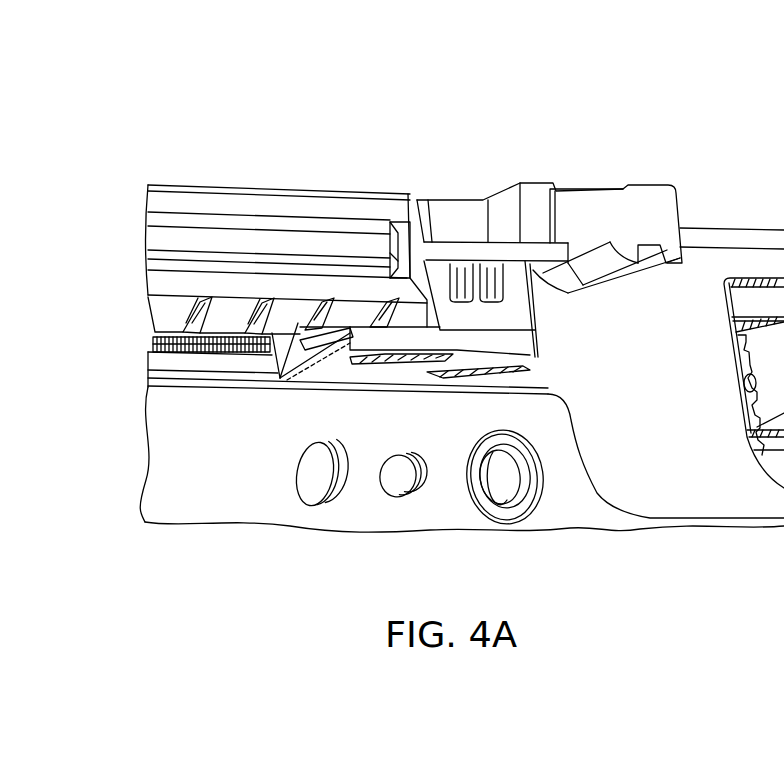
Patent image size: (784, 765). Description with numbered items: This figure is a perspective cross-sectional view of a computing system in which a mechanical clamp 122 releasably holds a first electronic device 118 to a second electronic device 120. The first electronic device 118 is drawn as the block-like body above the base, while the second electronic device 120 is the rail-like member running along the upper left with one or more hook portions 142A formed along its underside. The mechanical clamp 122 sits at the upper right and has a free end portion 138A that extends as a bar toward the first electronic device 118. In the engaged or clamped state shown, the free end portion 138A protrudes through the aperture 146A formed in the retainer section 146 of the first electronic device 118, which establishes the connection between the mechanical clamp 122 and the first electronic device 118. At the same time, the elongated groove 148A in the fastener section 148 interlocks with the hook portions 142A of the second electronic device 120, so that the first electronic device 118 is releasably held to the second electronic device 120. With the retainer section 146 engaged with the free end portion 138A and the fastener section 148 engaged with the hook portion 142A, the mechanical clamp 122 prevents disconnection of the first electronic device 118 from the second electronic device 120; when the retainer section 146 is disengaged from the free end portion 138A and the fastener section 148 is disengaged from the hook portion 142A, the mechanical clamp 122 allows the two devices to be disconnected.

The first electronic device 118 is at (344, 250).
The second electronic device 120 is at (262, 180).
The mechanical clamp 122 is at (640, 175).
The free end portion 138A is at (551, 243).
The hook portion 142A is at (400, 312).
The retainer section 146 is at (490, 315).
The aperture 146A is at (533, 270).
The fastener section 148 is at (372, 352).
The elongated groove 148A is at (280, 378).